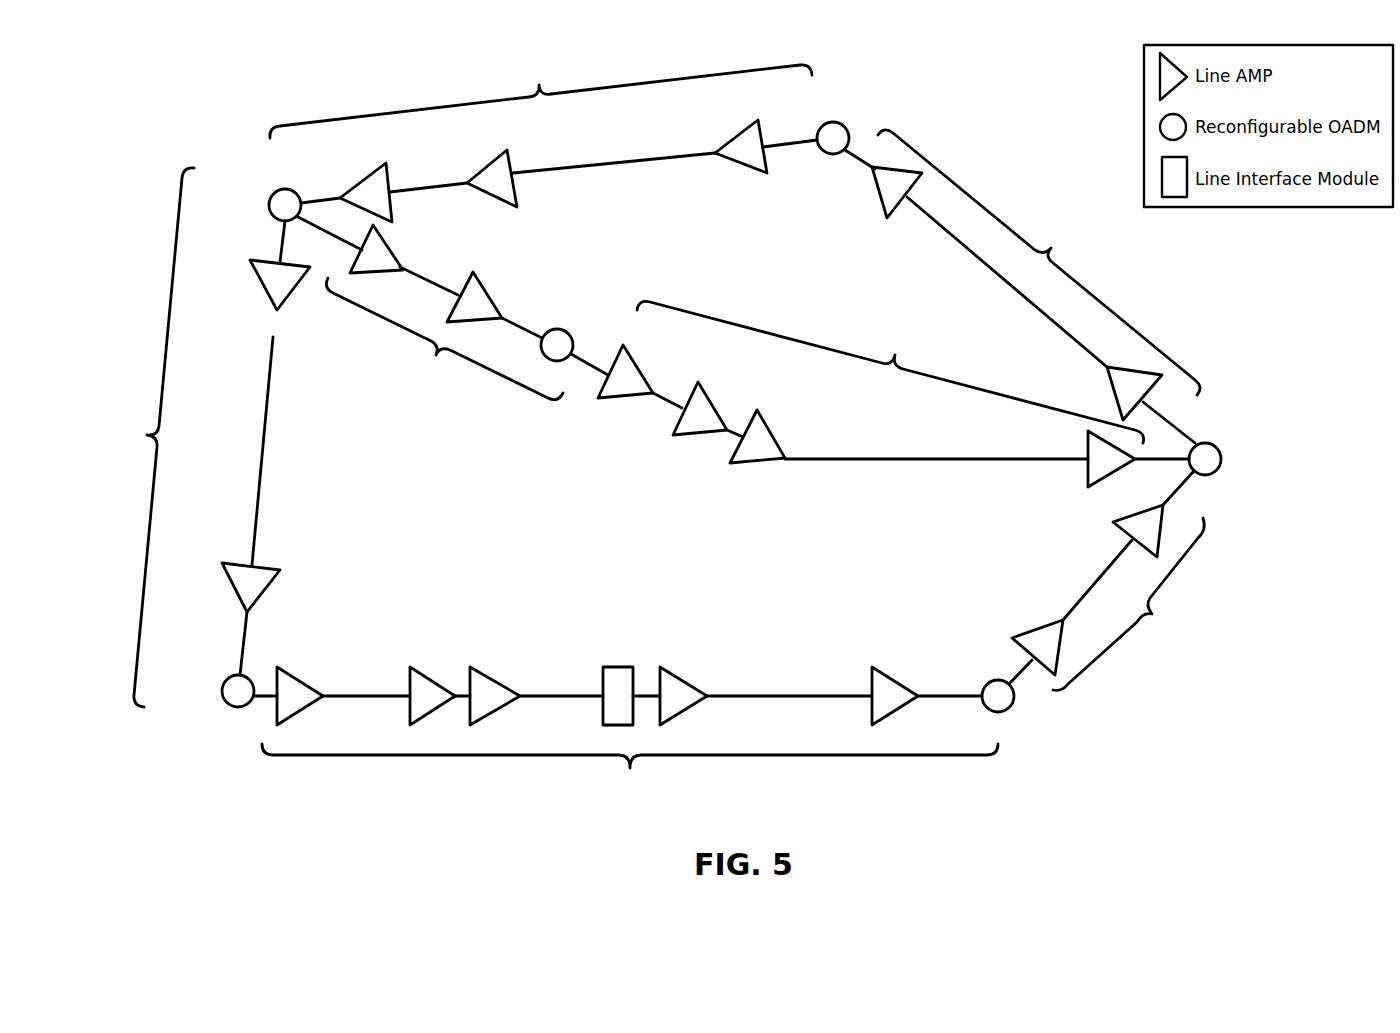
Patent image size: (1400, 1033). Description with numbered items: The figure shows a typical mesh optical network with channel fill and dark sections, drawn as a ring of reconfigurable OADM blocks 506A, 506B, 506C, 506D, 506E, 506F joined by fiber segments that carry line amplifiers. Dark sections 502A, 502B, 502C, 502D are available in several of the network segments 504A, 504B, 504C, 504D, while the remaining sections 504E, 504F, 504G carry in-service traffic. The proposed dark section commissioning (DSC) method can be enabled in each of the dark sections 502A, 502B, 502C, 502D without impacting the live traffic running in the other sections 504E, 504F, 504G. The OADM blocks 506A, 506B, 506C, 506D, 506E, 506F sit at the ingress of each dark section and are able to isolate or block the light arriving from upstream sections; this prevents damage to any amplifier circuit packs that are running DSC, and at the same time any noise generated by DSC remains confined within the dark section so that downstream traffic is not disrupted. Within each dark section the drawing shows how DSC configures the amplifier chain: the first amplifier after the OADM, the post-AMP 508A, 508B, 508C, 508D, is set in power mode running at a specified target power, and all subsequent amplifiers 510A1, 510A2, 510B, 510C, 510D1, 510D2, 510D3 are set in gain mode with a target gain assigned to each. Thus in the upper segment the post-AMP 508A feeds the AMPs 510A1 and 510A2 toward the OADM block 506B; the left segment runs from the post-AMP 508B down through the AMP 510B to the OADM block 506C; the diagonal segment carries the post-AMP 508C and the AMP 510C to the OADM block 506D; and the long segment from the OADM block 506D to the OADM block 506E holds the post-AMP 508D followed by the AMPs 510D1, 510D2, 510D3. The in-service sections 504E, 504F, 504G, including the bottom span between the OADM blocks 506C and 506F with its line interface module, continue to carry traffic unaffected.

The dark section 502A is at (541, 96).
The segment 504A is at (541, 96).
The dark section 502B is at (138, 437).
The segment 504B is at (138, 437).
The dark section 502C is at (439, 339).
The segment 504C is at (439, 339).
The dark section 502D is at (890, 372).
The segment 504D is at (890, 372).
The section 504E is at (1022, 286).
The section 504F is at (1107, 581).
The section 504G is at (626, 732).
The OADM block 506A is at (833, 121).
The OADM block 506B is at (270, 197).
The OADM block 506C is at (238, 707).
The OADM block 506D is at (550, 323).
The OADM block 506E is at (1220, 440).
The OADM block 506F is at (998, 712).
The post-AMP 508A is at (747, 168).
The post-AMP 508B is at (262, 290).
The post-AMP 508C is at (403, 255).
The post-AMP 508D is at (630, 353).
The AMP 510A1 is at (498, 153).
The AMP 510A2 is at (382, 164).
The AMP 510B is at (265, 592).
The AMP 510C is at (490, 292).
The AMP 510D1 is at (708, 392).
The AMP 510D2 is at (773, 427).
The AMP 510D3 is at (1088, 480).